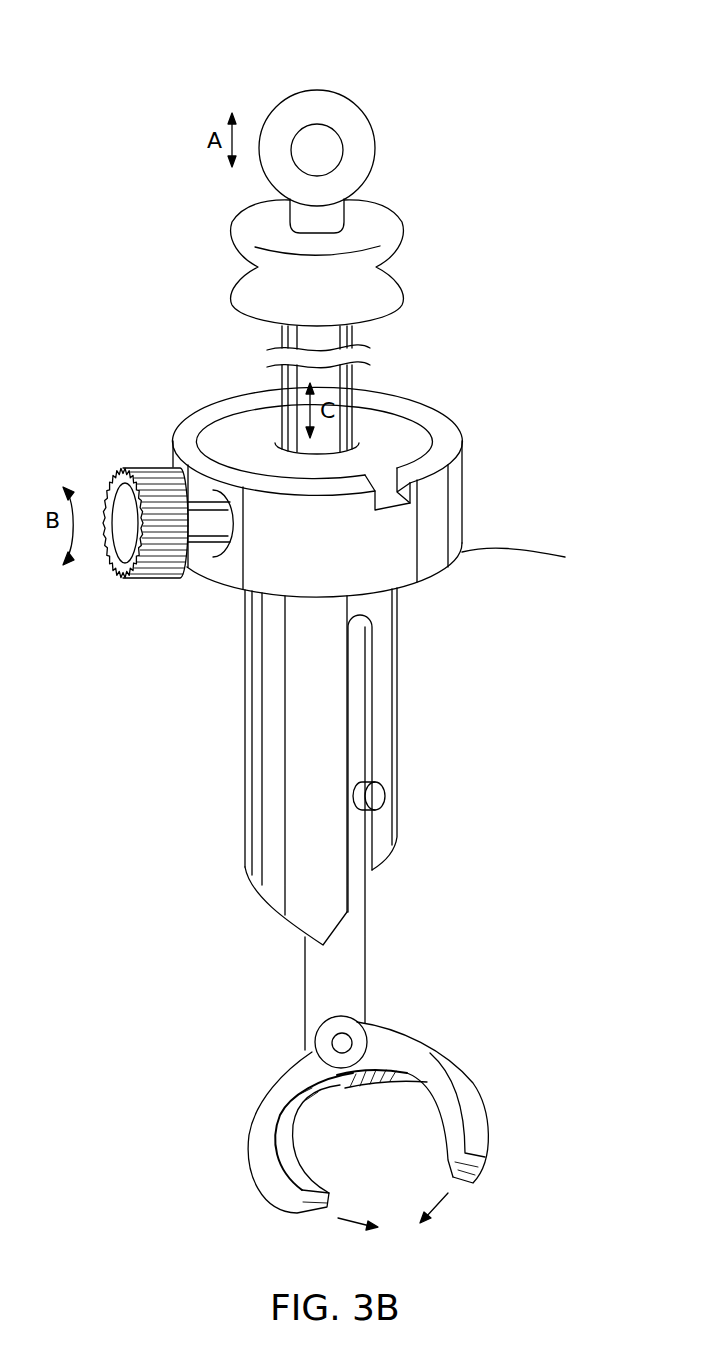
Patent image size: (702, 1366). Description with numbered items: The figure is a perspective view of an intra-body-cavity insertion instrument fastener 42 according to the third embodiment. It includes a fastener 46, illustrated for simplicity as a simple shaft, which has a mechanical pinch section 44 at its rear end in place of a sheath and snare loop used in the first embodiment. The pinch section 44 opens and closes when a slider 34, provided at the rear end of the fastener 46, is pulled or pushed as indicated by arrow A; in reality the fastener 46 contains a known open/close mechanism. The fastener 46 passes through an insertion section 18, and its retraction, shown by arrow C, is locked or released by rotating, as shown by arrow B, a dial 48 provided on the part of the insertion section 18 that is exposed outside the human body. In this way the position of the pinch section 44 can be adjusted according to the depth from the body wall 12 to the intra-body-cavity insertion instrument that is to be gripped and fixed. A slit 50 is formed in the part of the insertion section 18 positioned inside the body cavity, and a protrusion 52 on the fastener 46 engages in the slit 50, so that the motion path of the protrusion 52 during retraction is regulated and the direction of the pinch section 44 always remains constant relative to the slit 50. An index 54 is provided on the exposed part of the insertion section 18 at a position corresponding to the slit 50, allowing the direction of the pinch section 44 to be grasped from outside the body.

The body wall 12 is at (543, 556).
The insertion section 18 is at (339, 477).
The slider 34 is at (376, 152).
The intra-body-cavity insertion instrument fastener 42 is at (331, 229).
The pinch section 44 is at (478, 1104).
The fastener 46 is at (352, 957).
The dial 48 is at (141, 579).
The slit 50 is at (358, 700).
The protrusion 52 is at (384, 797).
The index 54 is at (388, 470).